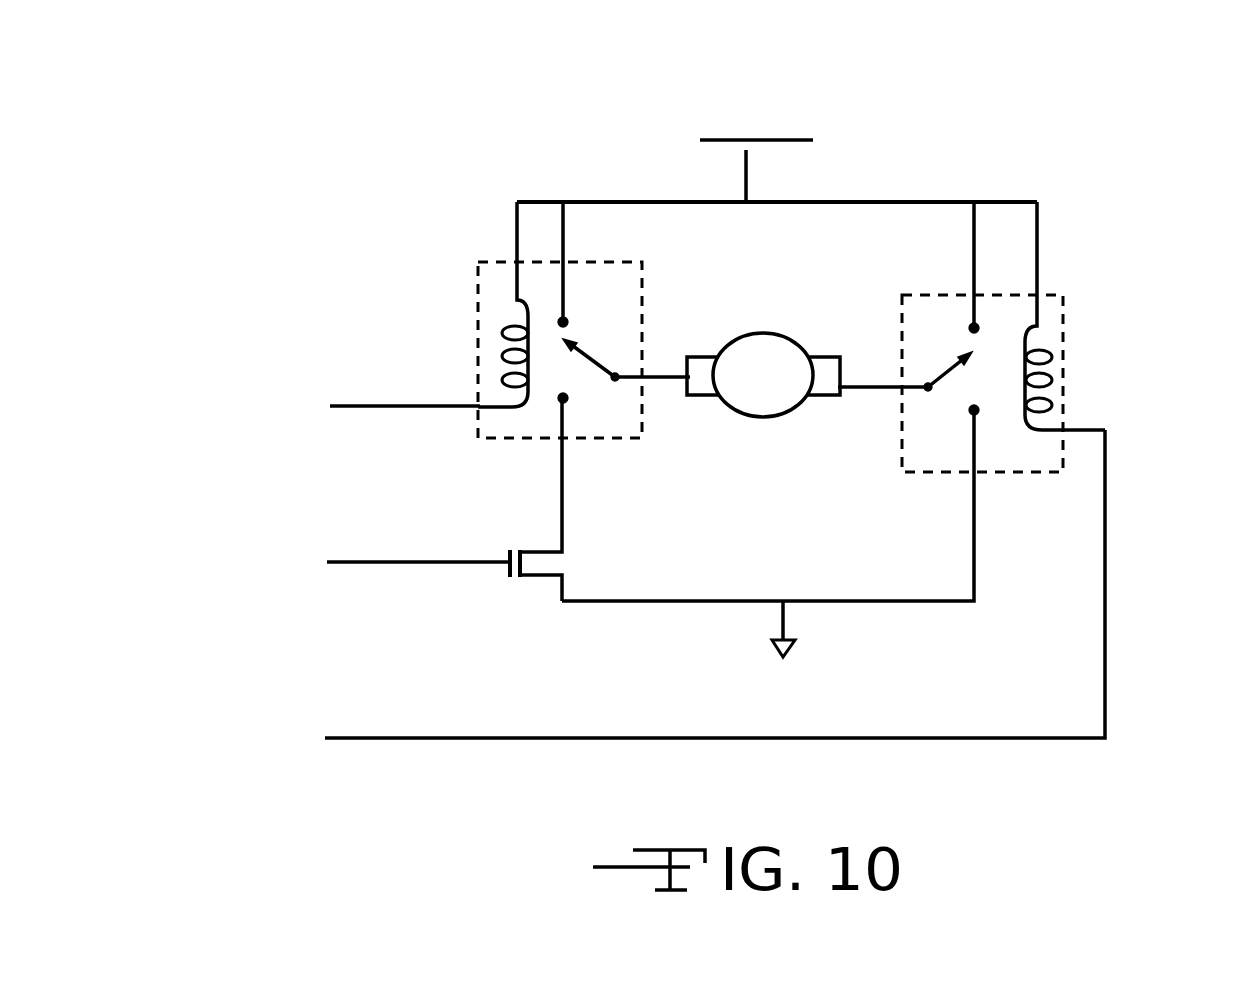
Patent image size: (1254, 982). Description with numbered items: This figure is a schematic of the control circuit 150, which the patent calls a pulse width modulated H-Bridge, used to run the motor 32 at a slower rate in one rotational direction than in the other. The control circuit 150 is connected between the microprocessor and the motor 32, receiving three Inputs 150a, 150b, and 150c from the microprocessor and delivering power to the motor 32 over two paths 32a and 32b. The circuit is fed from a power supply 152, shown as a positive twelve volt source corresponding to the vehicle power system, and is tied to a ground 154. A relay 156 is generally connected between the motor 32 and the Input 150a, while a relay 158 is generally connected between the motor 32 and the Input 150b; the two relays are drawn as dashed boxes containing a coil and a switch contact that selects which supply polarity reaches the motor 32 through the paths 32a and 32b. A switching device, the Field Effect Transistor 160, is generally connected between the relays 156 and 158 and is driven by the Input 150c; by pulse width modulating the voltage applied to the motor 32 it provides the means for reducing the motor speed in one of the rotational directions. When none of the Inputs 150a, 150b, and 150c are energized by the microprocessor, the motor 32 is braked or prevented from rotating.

The control circuit 150 is at (1072, 126).
The power supply 152 is at (817, 127).
The ground 154 is at (790, 648).
The relay 156 is at (478, 263).
The relay 158 is at (1053, 295).
The Field Effect Transistor 160 is at (537, 578).
The motor 32 is at (747, 413).
The path 32a is at (652, 377).
The path 32b is at (862, 387).
The Input 150a is at (361, 402).
The Input 150b is at (674, 591).
The Input 150c is at (376, 561).